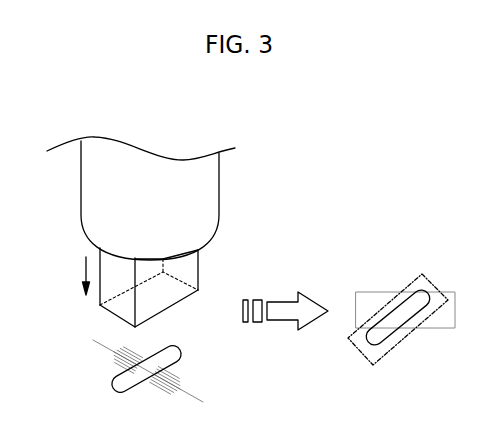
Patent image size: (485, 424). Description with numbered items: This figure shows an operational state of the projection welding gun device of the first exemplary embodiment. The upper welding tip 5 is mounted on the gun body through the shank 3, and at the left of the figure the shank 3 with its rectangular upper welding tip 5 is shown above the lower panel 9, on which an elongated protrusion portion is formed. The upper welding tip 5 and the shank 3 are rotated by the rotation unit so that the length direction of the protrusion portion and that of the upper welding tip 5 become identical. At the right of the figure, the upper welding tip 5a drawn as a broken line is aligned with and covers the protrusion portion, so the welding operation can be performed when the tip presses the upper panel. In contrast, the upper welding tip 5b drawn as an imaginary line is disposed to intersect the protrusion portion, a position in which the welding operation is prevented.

The shank 3 is at (213, 188).
The upper welding tip 5 is at (197, 263).
The upper welding tip 5a is at (400, 347).
The upper welding tip 5b is at (363, 290).
The lower panel 9 is at (100, 378).